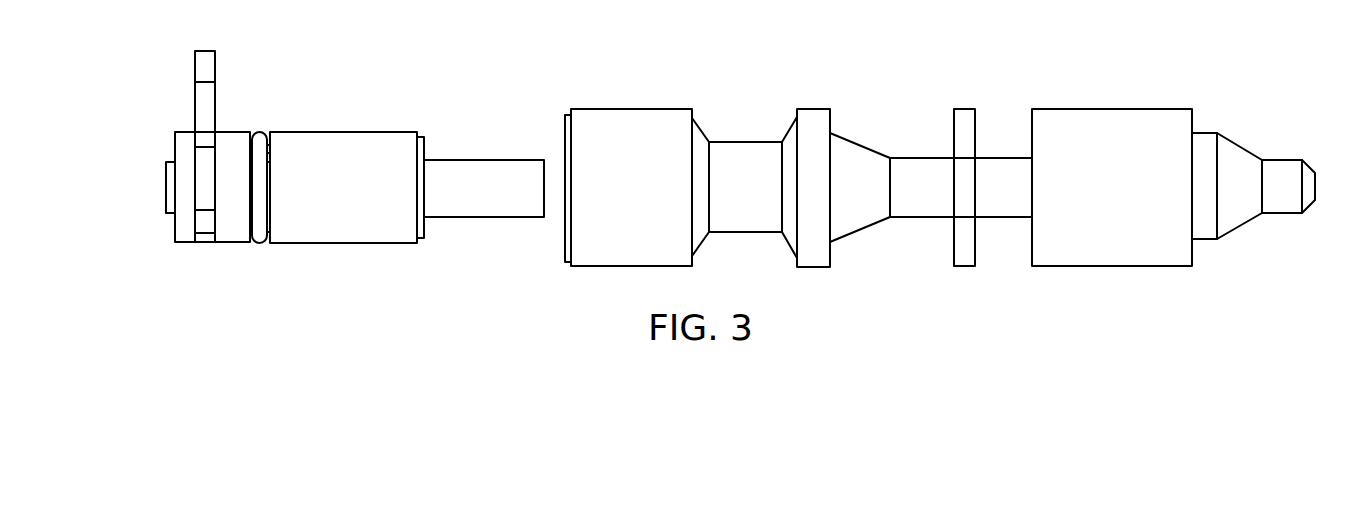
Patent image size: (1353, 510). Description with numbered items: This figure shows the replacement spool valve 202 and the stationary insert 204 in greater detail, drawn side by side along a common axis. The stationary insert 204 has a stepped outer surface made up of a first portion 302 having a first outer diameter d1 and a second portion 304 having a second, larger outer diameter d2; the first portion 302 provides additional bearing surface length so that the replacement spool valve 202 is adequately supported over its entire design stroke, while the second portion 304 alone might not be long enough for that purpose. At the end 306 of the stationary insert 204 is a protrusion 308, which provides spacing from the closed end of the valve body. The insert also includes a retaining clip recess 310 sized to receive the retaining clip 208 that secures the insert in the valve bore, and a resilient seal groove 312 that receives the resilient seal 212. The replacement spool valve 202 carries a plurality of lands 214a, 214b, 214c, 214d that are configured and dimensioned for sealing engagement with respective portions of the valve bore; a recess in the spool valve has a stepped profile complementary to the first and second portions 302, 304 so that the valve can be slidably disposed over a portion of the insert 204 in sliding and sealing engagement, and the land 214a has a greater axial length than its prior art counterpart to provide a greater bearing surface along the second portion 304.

The replacement spool valve 202 is at (1285, 110).
The stationary insert 204 is at (474, 126).
The retaining clip 208 is at (195, 63).
The resilient seal 212 is at (258, 244).
The land 214a is at (618, 109).
The land 214b is at (813, 109).
The land 214c is at (965, 109).
The land 214d is at (1157, 109).
The first portion 302 is at (483, 217).
The second portion 304 is at (373, 243).
The end 306 is at (130, 214).
The protrusion 308 is at (166, 183).
The retaining clip recess 310 is at (203, 242).
The resilient seal groove 312 is at (249, 246).
The first outer diameter d1 is at (523, 130).
The second outer diameter d2 is at (298, 273).